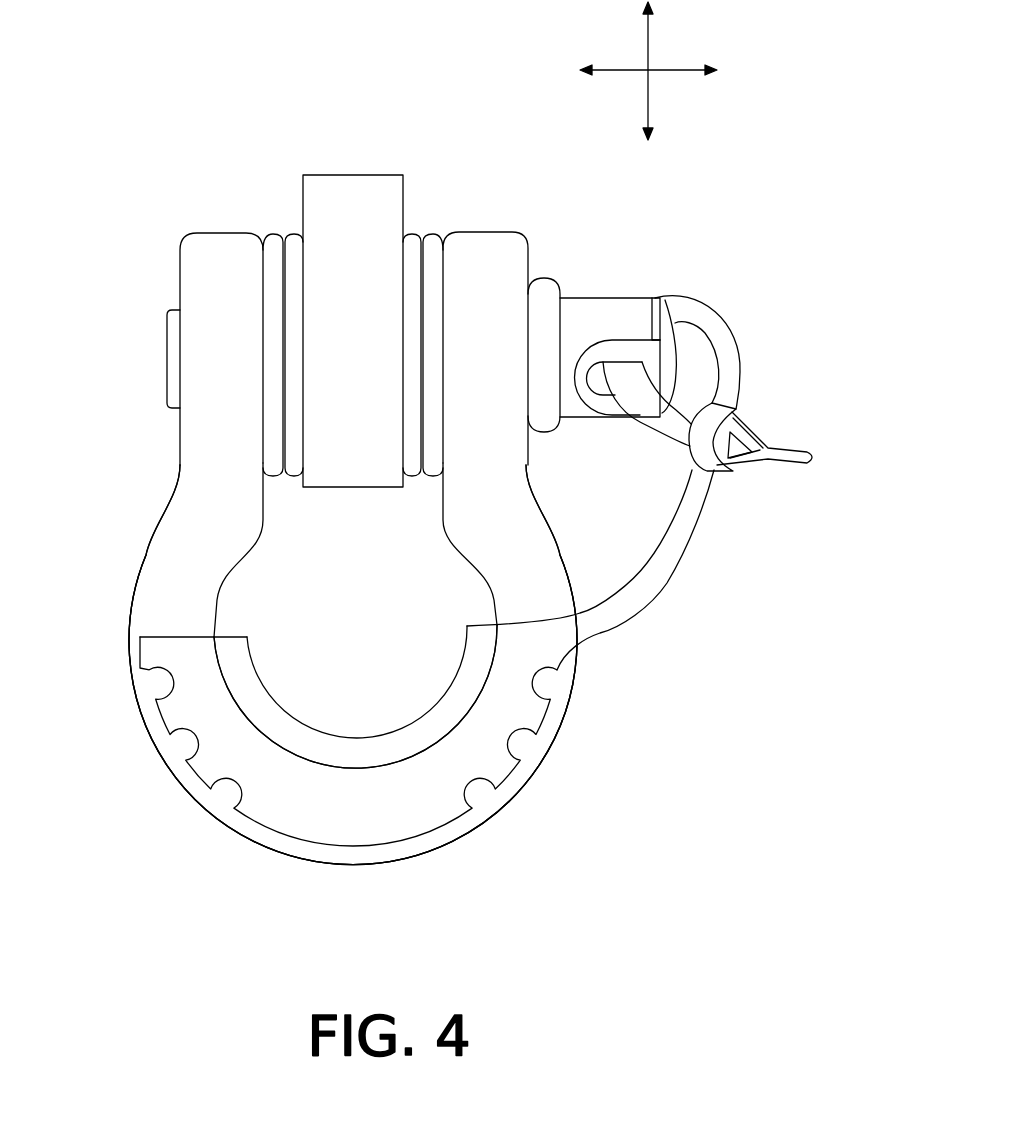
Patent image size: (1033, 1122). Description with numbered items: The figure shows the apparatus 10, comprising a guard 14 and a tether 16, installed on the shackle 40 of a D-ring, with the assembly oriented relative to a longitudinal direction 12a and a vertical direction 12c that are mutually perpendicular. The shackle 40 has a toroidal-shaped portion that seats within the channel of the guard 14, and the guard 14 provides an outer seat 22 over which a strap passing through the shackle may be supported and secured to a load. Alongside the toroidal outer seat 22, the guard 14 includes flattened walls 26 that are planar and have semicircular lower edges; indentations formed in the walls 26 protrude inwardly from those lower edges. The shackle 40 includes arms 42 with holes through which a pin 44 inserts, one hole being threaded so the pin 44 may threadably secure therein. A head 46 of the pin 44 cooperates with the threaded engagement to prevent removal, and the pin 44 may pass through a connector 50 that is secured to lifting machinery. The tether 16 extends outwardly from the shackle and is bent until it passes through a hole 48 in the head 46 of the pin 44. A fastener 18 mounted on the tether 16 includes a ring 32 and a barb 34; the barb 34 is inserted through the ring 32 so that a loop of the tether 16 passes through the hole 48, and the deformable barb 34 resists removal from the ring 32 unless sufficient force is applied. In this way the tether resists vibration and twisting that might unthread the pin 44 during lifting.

The apparatus 10 is at (158, 794).
The longitudinal direction 12a is at (693, 70).
The vertical direction 12c is at (650, 47).
The guard 14 is at (331, 668).
The tether 16 is at (681, 572).
The fastener 18 is at (745, 402).
The outer seat 22 is at (333, 740).
The flattened walls 26 is at (353, 803).
The ring 32 is at (700, 443).
The barb 34 is at (757, 458).
The shackle 40 is at (185, 582).
The arms 42 is at (227, 288).
The pin 44 is at (168, 370).
The head 46 is at (545, 296).
The hole 48 is at (602, 365).
The connector 50 is at (343, 222).